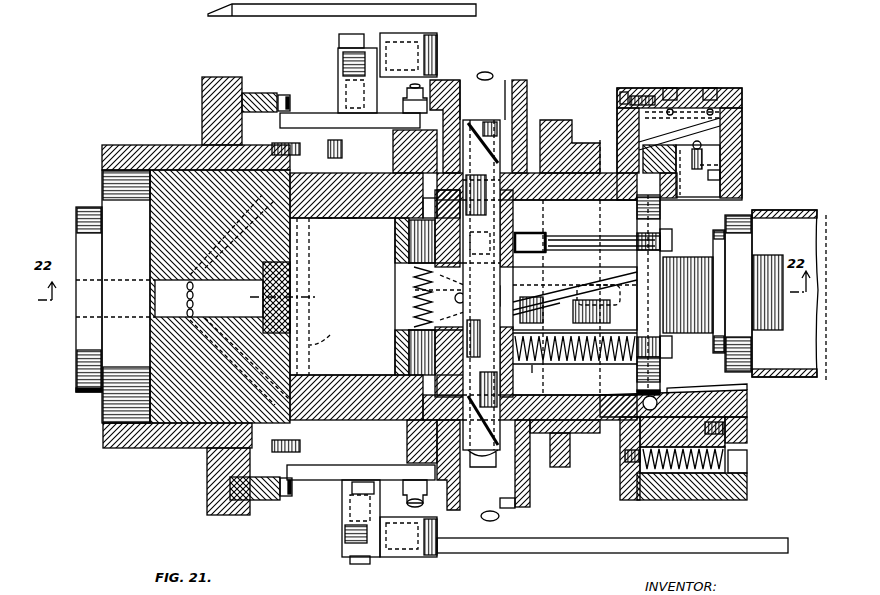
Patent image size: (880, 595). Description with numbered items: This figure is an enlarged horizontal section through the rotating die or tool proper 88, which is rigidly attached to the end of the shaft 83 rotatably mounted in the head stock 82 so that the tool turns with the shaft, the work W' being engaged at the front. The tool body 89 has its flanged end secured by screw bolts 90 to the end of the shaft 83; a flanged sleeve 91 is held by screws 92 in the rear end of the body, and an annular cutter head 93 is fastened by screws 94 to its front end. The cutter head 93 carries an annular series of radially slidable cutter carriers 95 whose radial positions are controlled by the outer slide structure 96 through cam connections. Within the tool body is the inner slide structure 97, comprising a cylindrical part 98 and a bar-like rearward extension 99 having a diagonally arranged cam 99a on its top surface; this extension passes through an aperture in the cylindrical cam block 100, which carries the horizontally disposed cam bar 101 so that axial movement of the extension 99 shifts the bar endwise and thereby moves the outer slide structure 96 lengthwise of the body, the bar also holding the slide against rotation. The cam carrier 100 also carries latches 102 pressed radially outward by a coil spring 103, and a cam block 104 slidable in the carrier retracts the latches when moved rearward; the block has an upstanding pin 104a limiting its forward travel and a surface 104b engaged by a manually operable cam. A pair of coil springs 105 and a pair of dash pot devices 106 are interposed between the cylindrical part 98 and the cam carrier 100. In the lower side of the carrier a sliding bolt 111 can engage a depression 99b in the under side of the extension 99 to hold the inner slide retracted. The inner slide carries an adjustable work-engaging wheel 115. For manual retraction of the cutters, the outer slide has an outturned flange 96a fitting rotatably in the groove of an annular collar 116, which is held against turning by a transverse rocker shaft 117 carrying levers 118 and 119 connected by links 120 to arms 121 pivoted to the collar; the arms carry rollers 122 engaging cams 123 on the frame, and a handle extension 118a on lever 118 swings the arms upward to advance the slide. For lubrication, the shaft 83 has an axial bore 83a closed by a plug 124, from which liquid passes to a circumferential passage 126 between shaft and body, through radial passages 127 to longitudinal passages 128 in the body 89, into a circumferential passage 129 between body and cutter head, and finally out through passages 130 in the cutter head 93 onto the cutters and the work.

The head stock 82 is at (205, 80).
The shaft 83 is at (90, 398).
The axial bore 83a is at (167, 302).
The die or tool proper 88 is at (580, 105).
The tool body 89 is at (358, 178).
The screw bolts 90 is at (342, 150).
The flanged sleeve 91 is at (350, 219).
The screws 92 is at (325, 219).
The annular cutter head 93 is at (750, 413).
The screws 94 is at (668, 205).
The cutter carriers 95 is at (738, 135).
The outer slide structure 96 is at (535, 115).
The outturned flange 96a is at (405, 435).
The inner slide structure 97 is at (633, 230).
The cylindrical part 98 is at (647, 223).
The rearward extension 99 is at (570, 247).
The diagonally arranged cam 99a is at (560, 298).
The depression 99b is at (605, 297).
The cylindrical cam block 100 is at (520, 233).
The cam bar 101 is at (490, 115).
The latches 102 is at (410, 255).
The coil spring 103 is at (413, 290).
The cam block 104 is at (408, 305).
The upstanding pin 104a is at (462, 302).
The surface 104b is at (513, 286).
The coil springs 105 is at (552, 364).
The dash pot devices 106 is at (543, 226).
The sliding bolt 111 is at (543, 312).
The work-engaging wheel 115 is at (755, 352).
The annular collar 116 is at (443, 85).
The rocker shaft 117 is at (436, 36).
The lever 118 is at (388, 558).
The handle extension 118a is at (564, 552).
The lever 119 is at (372, 36).
The links 120 is at (345, 60).
The arms 121 is at (332, 118).
The rollers 122 is at (286, 94).
The cams 123 is at (258, 92).
The plug 124 is at (322, 296).
The circumferential passage 126 is at (205, 128).
The radial passages 127 is at (355, 495).
The longitudinal passages 128 is at (398, 240).
The circumferential passage 129 is at (616, 445).
The passages 130 is at (698, 393).
The workpiece W' is at (789, 276).